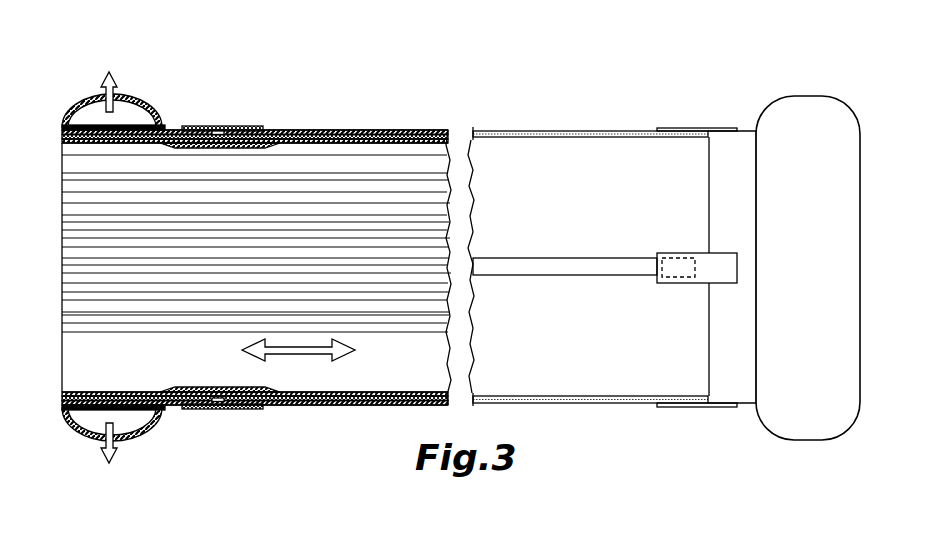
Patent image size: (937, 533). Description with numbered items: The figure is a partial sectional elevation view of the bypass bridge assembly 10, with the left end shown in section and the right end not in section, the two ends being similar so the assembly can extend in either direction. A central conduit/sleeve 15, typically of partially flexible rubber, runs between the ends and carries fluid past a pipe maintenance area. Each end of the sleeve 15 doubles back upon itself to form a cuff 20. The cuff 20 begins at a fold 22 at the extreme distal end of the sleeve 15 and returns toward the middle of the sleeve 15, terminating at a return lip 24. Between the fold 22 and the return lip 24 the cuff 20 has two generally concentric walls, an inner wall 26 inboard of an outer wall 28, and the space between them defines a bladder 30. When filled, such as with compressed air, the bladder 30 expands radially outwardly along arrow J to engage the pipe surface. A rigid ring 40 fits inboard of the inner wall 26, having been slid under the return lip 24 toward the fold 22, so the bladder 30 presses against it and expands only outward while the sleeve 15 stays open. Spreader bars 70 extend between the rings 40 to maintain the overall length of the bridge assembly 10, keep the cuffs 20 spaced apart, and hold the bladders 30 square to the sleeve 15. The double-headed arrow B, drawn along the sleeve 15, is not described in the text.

The bypass bridge assembly 10 is at (154, 457).
The conduit/sleeve 15 is at (105, 131).
The cuff 20 is at (150, 91).
The fold 22 is at (62, 128).
The return lip 24 is at (165, 124).
The inner wall 26 is at (119, 127).
The outer wall 28 is at (97, 98).
The bladder 30 is at (92, 115).
The ring 40 is at (176, 130).
The spreader bar 70 is at (522, 120).
The arrow J is at (105, 71).
The movement direction B is at (294, 351).